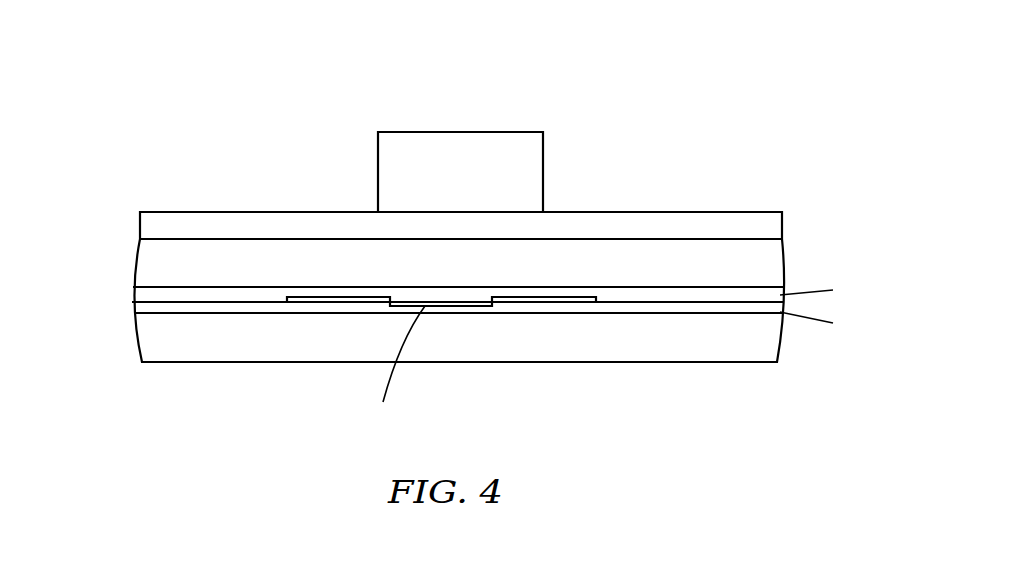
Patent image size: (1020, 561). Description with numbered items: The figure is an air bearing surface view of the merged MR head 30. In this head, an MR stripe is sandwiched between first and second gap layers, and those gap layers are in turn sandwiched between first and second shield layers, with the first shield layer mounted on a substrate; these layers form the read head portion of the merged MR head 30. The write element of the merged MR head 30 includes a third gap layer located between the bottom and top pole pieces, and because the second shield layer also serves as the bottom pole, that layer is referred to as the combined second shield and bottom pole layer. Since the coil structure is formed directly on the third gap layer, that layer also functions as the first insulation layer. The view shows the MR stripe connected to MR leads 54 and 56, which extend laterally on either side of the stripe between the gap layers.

The merged MR head 30 is at (566, 102).
The MR lead 54 is at (327, 302).
The MR lead 56 is at (540, 302).